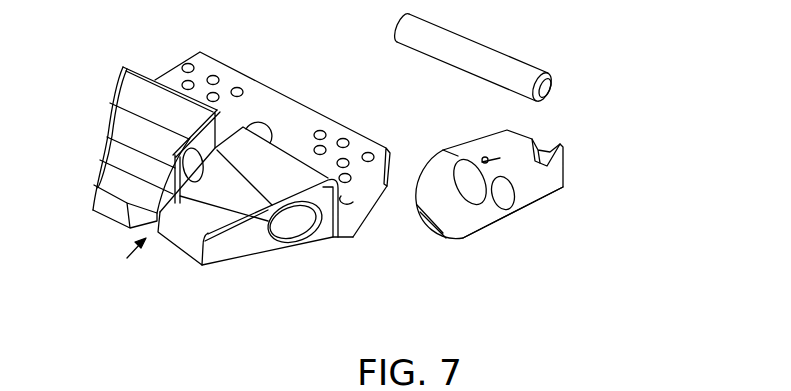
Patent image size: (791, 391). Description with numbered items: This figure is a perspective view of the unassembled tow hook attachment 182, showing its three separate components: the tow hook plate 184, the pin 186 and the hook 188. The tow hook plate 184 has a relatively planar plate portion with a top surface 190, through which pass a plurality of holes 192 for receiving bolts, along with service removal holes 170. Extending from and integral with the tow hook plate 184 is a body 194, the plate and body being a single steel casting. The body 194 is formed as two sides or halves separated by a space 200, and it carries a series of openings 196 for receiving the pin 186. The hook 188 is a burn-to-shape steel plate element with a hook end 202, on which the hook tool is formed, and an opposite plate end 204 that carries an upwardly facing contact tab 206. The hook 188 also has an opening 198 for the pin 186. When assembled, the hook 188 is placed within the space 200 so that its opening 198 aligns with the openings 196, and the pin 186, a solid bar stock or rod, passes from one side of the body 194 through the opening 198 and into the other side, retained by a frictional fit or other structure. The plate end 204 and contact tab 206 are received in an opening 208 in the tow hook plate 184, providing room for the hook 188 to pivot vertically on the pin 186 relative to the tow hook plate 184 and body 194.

The service removal holes 170 is at (0, 390).
The tow hook attachment 182 is at (347, 233).
The tow hook plate 184 is at (360, 205).
The pin 186 is at (483, 42).
The hook 188 is at (500, 220).
The top surface 190 is at (303, 112).
The holes 192 is at (186, 66).
The body 194 is at (102, 178).
The openings 196 is at (118, 100).
The opening 198 is at (505, 197).
The space 200 is at (122, 267).
The hook end 202 is at (440, 233).
The plate end 204 is at (567, 167).
The contact tab 206 is at (547, 143).
The opening 208 is at (267, 127).